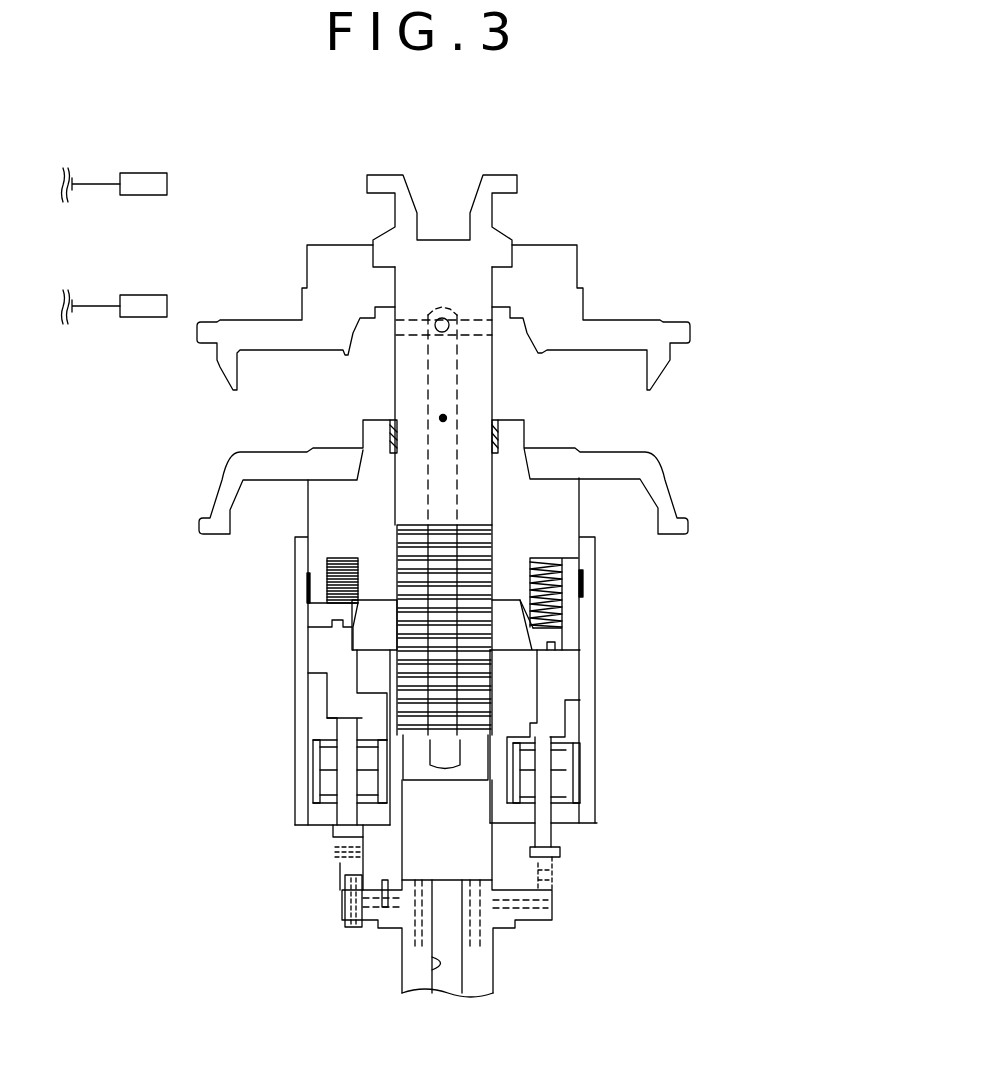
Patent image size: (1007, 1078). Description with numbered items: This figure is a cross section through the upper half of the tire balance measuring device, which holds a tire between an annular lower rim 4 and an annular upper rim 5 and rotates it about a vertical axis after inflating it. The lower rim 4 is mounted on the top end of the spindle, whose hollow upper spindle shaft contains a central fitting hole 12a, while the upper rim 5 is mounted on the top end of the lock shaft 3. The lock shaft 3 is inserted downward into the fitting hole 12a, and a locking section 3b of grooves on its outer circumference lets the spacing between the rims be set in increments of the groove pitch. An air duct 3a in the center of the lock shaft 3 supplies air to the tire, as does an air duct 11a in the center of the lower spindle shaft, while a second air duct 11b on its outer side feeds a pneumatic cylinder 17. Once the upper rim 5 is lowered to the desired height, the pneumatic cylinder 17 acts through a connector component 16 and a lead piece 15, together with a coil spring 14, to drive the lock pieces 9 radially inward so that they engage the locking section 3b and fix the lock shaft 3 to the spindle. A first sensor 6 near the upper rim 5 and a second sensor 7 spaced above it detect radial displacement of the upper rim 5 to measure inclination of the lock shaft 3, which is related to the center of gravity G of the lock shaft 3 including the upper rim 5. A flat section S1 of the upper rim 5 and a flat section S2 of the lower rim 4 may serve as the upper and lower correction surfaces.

The second sensor 7 is at (158, 173).
The first sensor 6 is at (158, 295).
The upper rim 5 is at (688, 318).
The flat section of the upper rim S1 is at (628, 318).
The flat section of the lower rim S2 is at (278, 483).
The lock shaft 3 is at (493, 380).
The air duct 3a is at (437, 382).
The locking section 3b is at (493, 577).
The center of gravity G is at (438, 418).
The fitting hole 12a is at (490, 478).
The lower rim 4 is at (655, 462).
The coil spring 14 is at (323, 568).
The lead piece 15 is at (333, 610).
The lock piece 9 is at (365, 633).
The connector component 16 is at (333, 661).
The pneumatic cylinder 17 is at (303, 767).
The air duct 11a is at (435, 972).
The air duct 11b is at (422, 935).